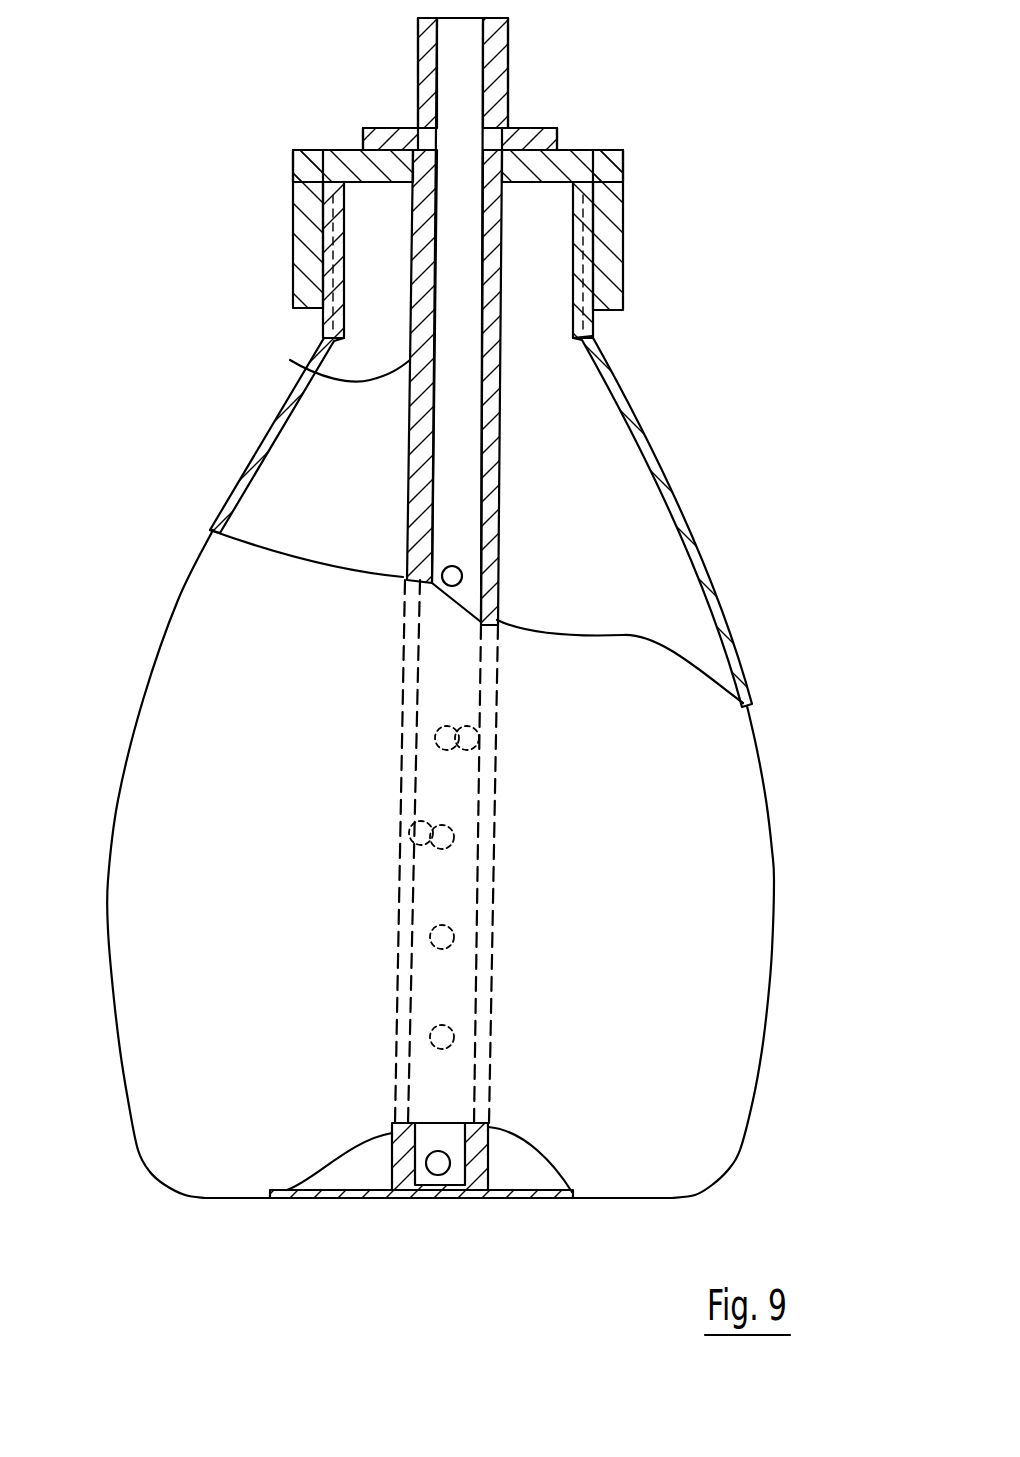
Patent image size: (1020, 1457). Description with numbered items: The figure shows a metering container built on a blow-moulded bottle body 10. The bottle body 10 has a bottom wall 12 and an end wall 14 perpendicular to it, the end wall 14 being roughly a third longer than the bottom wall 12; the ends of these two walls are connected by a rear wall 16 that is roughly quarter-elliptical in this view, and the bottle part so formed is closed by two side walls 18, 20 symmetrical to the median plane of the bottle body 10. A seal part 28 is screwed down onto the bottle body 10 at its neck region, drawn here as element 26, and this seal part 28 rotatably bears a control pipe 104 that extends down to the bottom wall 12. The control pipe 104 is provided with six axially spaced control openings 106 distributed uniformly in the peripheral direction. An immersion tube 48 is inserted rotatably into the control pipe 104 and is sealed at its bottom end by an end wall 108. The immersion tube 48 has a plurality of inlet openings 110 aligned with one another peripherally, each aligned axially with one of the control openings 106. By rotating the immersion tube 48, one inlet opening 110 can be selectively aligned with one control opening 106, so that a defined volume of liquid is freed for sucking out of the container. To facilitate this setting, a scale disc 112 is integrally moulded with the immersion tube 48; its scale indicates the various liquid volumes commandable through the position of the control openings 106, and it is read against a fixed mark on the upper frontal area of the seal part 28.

The bottle body 10 is at (231, 1122).
The bottom wall 12 is at (327, 1200).
The end wall 14 is at (254, 447).
The rear wall 16 is at (667, 483).
The side wall 18 is at (655, 799).
The side wall 20 is at (352, 478).
The neck 26 is at (585, 267).
The seal part 28 is at (628, 198).
The immersion tube 48 is at (290, 360).
The control pipe 104 is at (500, 443).
The control openings 106 is at (450, 566).
The end wall 108 is at (418, 1200).
The inlet openings 110 is at (497, 568).
The scale disc 112 is at (545, 128).